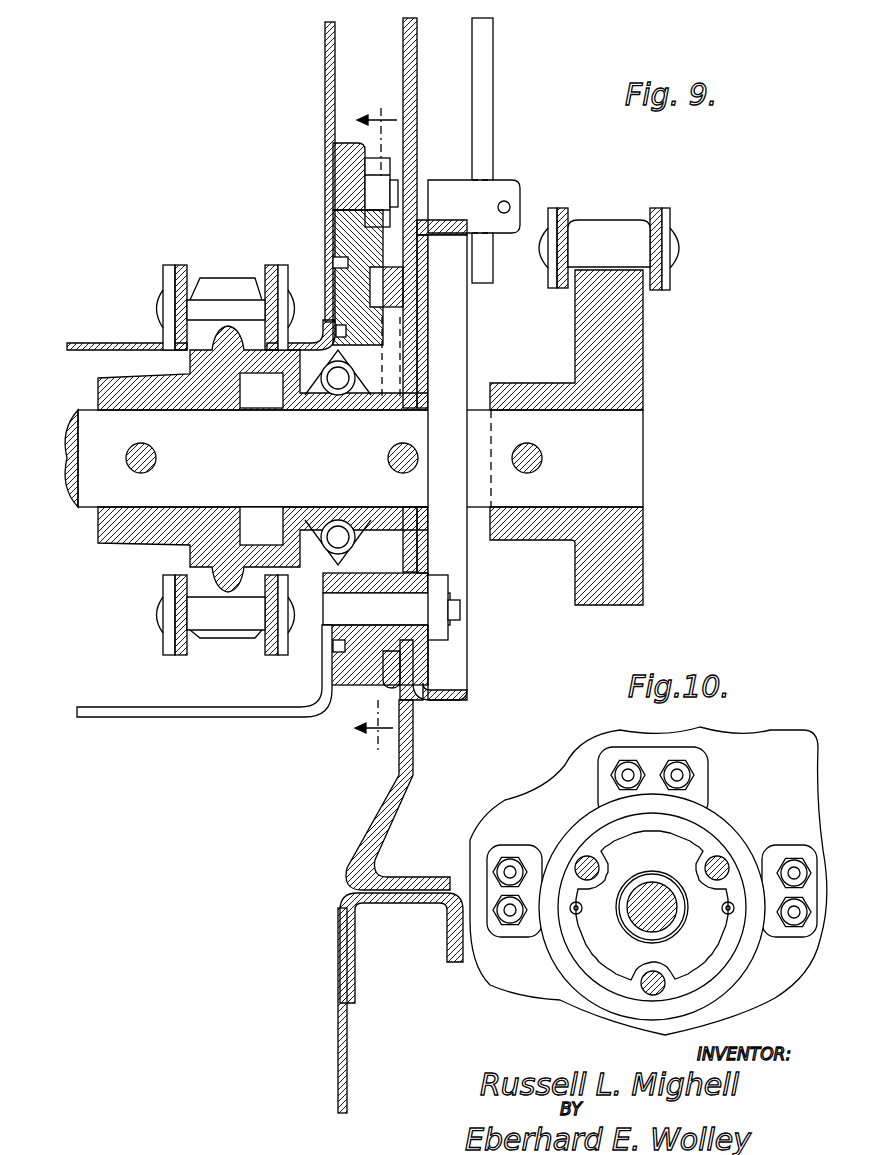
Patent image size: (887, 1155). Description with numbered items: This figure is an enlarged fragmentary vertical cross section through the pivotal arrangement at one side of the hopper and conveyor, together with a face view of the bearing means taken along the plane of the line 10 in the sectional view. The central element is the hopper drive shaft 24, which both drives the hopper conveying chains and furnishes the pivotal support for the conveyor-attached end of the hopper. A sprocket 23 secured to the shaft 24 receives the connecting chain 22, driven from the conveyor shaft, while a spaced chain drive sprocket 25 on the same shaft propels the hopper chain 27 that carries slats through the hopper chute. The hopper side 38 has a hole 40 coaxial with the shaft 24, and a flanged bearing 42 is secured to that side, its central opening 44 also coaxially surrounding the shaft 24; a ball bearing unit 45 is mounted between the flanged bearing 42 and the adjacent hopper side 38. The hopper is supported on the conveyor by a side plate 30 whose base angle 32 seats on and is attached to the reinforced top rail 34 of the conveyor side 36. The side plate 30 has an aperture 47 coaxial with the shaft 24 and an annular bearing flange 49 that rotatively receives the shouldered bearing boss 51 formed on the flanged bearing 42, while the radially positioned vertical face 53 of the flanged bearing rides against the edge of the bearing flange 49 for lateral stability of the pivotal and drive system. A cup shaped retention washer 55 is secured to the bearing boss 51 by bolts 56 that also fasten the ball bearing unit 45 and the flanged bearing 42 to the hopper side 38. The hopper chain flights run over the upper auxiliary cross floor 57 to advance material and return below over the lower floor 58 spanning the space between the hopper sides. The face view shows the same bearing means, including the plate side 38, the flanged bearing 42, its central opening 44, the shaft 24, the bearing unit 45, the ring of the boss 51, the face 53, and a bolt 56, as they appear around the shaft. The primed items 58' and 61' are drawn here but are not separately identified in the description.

In FIG. 9, the section line 10 is at (376, 435).
In FIG. 9, the connecting chain 22 is at (668, 225).
In FIG. 9, the sprocket 23 is at (640, 343).
In FIG. 9, the hopper drive shaft 24 is at (630, 445).
In FIG. 10, the hopper drive shaft 24 is at (640, 890).
In FIG. 9, the chain drive sprocket 25 is at (228, 278).
In FIG. 9, the hopper chain 27 is at (180, 265).
In FIG. 9, the side plate 30 is at (418, 55).
In FIG. 9, the base angle 32 is at (343, 851).
In FIG. 9, the reinforced top rail 34 is at (390, 905).
In FIG. 9, the conveyor side 36 is at (338, 1020).
In FIG. 9, the hopper side 38 is at (325, 72).
In FIG. 10, the hopper side 38 is at (760, 760).
In FIG. 9, the hole 40 is at (300, 550).
In FIG. 9, the flanged bearing 42 is at (335, 225).
In FIG. 10, the flanged bearing 42 is at (612, 770).
In FIG. 9, the central opening 44 is at (395, 317).
In FIG. 10, the central opening 44 is at (690, 838).
In FIG. 9, the ball bearing unit 45 is at (378, 377).
In FIG. 10, the ball bearing unit 45 is at (608, 940).
In FIG. 9, the aperture 47 is at (397, 645).
In FIG. 9, the annular bearing flange 49 is at (397, 267).
In FIG. 9, the shouldered bearing boss 51 is at (428, 308).
In FIG. 10, the shouldered bearing boss 51 is at (612, 832).
In FIG. 9, the vertical face 53 is at (385, 248).
In FIG. 10, the vertical face 53 is at (688, 805).
In FIG. 9, the cup shaped retention washer 55 is at (455, 545).
In FIG. 9, the bolt 56 is at (460, 610).
In FIG. 10, the bolt 56 is at (648, 992).
In FIG. 9, the upper auxiliary cross floor 57 is at (82, 340).
In FIG. 9, the lower floor 58 is at (204, 701).
In FIG. 9, the bar 58' is at (515, 150).
In FIG. 9, the bracket 61' is at (503, 187).